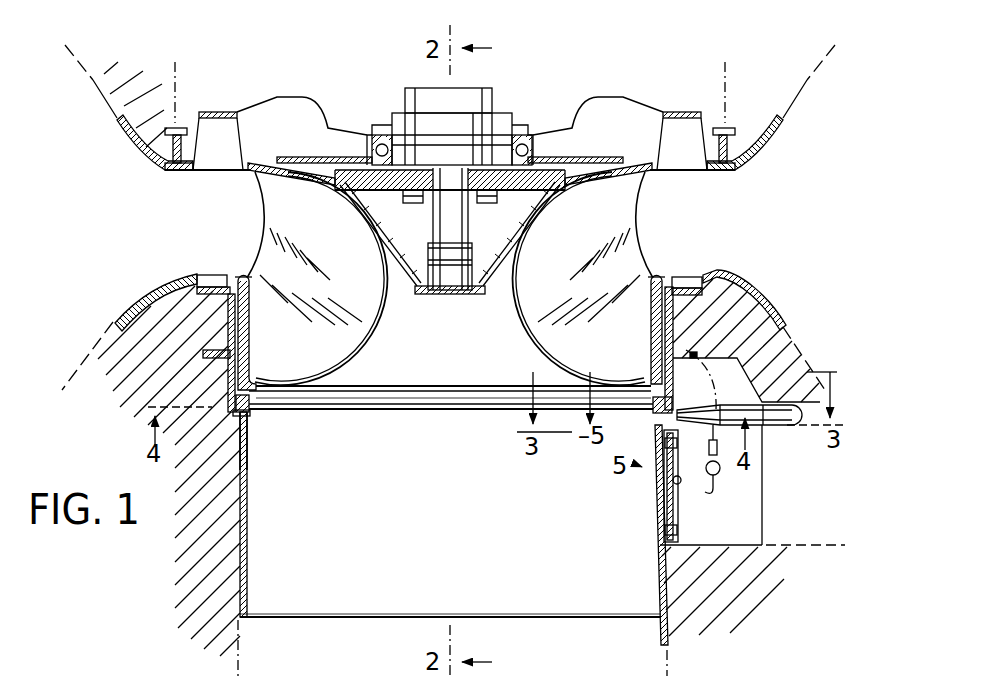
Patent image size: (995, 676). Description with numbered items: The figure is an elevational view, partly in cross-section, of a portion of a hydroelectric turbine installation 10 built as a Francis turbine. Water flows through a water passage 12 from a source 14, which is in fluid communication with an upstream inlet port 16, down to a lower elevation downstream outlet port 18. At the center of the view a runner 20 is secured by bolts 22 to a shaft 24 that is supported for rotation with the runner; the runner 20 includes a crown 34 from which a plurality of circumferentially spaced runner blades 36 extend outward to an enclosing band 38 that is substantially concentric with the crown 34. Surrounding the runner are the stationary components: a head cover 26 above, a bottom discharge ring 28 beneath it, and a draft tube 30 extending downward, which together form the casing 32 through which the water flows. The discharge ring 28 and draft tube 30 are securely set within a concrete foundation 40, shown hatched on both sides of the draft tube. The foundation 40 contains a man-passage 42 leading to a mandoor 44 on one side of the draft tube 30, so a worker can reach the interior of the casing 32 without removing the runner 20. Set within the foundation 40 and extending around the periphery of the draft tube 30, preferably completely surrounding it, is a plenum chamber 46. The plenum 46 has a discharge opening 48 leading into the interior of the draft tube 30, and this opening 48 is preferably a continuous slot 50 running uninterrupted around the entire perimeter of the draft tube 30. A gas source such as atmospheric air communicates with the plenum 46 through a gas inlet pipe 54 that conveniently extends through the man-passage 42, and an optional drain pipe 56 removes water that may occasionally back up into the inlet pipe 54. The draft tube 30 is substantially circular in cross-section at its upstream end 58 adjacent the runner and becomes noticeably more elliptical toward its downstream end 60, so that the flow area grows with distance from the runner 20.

The hydroelectric turbine installation 10 is at (606, 40).
The water passage 12 is at (338, 259).
The source 14 is at (441, 217).
The upstream inlet port 16 is at (442, 163).
The downstream outlet port 18 is at (450, 635).
The runner 20 is at (491, 300).
The bolts 22 is at (418, 204).
The shaft 24 is at (495, 108).
The head cover 26 is at (222, 112).
The bottom discharge ring 28 is at (250, 325).
The draft tube 30 is at (249, 493).
The casing 32 is at (250, 470).
The crown 34 is at (305, 157).
The runner blades 36 is at (358, 325).
The enclosing band 38 is at (250, 350).
The concrete foundation 40 is at (770, 353).
The man-passage 42 is at (753, 485).
The mandoor 44 is at (678, 510).
The plenum chamber 46 is at (250, 426).
The discharge opening 48 is at (425, 418).
The continuous slot 50 is at (476, 418).
The gas inlet pipe 54 is at (773, 432).
The drain pipe 56 is at (718, 492).
The upstream end 58 is at (347, 398).
The downstream end 60 is at (363, 620).